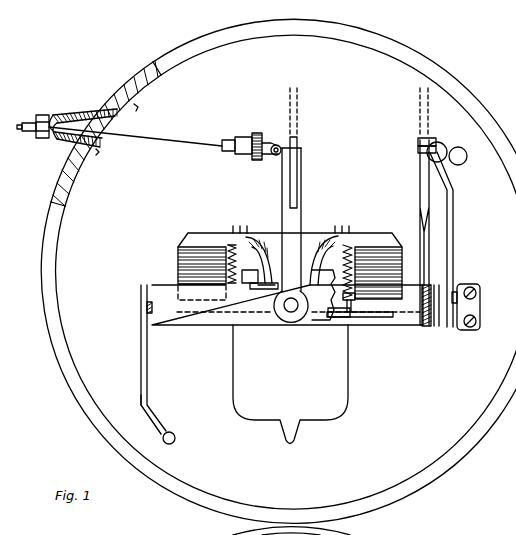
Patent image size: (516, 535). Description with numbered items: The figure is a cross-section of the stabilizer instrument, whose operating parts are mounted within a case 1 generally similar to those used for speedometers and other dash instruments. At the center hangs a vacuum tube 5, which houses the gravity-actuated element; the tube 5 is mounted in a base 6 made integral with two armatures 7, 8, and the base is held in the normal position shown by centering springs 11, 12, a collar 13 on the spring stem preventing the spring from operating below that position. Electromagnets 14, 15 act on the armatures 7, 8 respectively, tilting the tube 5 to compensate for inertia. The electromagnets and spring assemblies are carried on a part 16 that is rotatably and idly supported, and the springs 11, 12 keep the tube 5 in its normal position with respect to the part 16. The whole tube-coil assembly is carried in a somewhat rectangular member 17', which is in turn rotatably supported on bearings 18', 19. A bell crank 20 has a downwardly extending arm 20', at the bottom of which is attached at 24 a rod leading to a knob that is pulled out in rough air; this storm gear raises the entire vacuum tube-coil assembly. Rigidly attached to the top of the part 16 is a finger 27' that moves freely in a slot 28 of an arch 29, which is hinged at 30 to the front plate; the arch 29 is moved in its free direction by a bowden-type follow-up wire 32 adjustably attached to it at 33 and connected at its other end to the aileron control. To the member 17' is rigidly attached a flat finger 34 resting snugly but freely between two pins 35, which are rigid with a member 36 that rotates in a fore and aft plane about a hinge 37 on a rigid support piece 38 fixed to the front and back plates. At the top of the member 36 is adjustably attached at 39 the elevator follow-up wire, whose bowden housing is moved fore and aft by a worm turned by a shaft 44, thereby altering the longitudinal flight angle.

The case 1 is at (196, 38).
The follow-up wire 32 is at (178, 132).
The adjustable attachment 33 is at (258, 132).
The finger 27' is at (316, 148).
The arch 29 is at (282, 179).
The slot 28 is at (298, 183).
The hinge 30 is at (296, 312).
The electromagnet 14 is at (183, 243).
The electromagnet 15 is at (406, 241).
The centering spring 11 is at (261, 244).
The part 16 is at (273, 239).
The centering spring 12 is at (331, 246).
The base 6 is at (333, 303).
The collar 13 is at (340, 312).
The armature 8 is at (354, 301).
The armature 7 is at (212, 326).
The rectangular member 17' is at (194, 320).
The vacuum tube 5 is at (290, 384).
The bearing 18' is at (141, 347).
The arm 20' is at (137, 413).
The attachment point 24 is at (175, 433).
The bell crank 20 is at (282, 325).
The flat finger 34 is at (419, 178).
The pin 35 is at (417, 149).
The adjustable attachment 39 is at (440, 143).
The shaft 44 is at (465, 162).
The member 36 is at (455, 239).
The bearing 19 is at (441, 327).
The hinge 37 is at (462, 304).
The support piece 38 is at (478, 316).